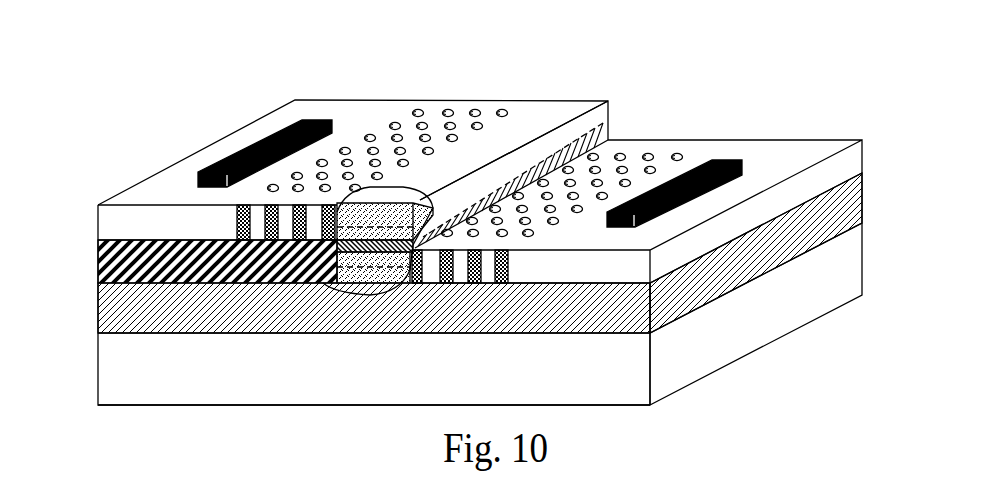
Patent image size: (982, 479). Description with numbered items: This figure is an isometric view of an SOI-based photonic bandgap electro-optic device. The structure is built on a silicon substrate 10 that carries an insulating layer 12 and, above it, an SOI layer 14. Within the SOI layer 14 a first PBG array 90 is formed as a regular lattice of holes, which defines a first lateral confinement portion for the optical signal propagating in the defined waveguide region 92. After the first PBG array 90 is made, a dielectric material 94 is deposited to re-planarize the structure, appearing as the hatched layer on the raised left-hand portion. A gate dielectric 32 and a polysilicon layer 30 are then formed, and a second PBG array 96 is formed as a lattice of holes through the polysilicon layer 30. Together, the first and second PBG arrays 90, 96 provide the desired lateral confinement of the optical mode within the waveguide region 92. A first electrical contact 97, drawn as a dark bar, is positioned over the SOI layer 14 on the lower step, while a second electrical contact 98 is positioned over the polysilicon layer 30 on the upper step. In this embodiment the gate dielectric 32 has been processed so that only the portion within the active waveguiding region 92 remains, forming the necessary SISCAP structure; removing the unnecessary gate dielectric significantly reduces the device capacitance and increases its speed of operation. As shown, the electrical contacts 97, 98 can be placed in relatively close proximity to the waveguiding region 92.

The silicon substrate 10 is at (833, 270).
The insulating layer 12 is at (833, 215).
The SOI layer 14 is at (833, 167).
The polysilicon layer 30 is at (132, 224).
The gate dielectric 32 is at (610, 137).
The first PBG array 90 is at (612, 133).
The waveguide region 92 is at (498, 145).
The dielectric material 94 is at (117, 251).
The second PBG array 96 is at (417, 91).
The first electrical contact 97 is at (727, 158).
The second electrical contact 98 is at (252, 148).